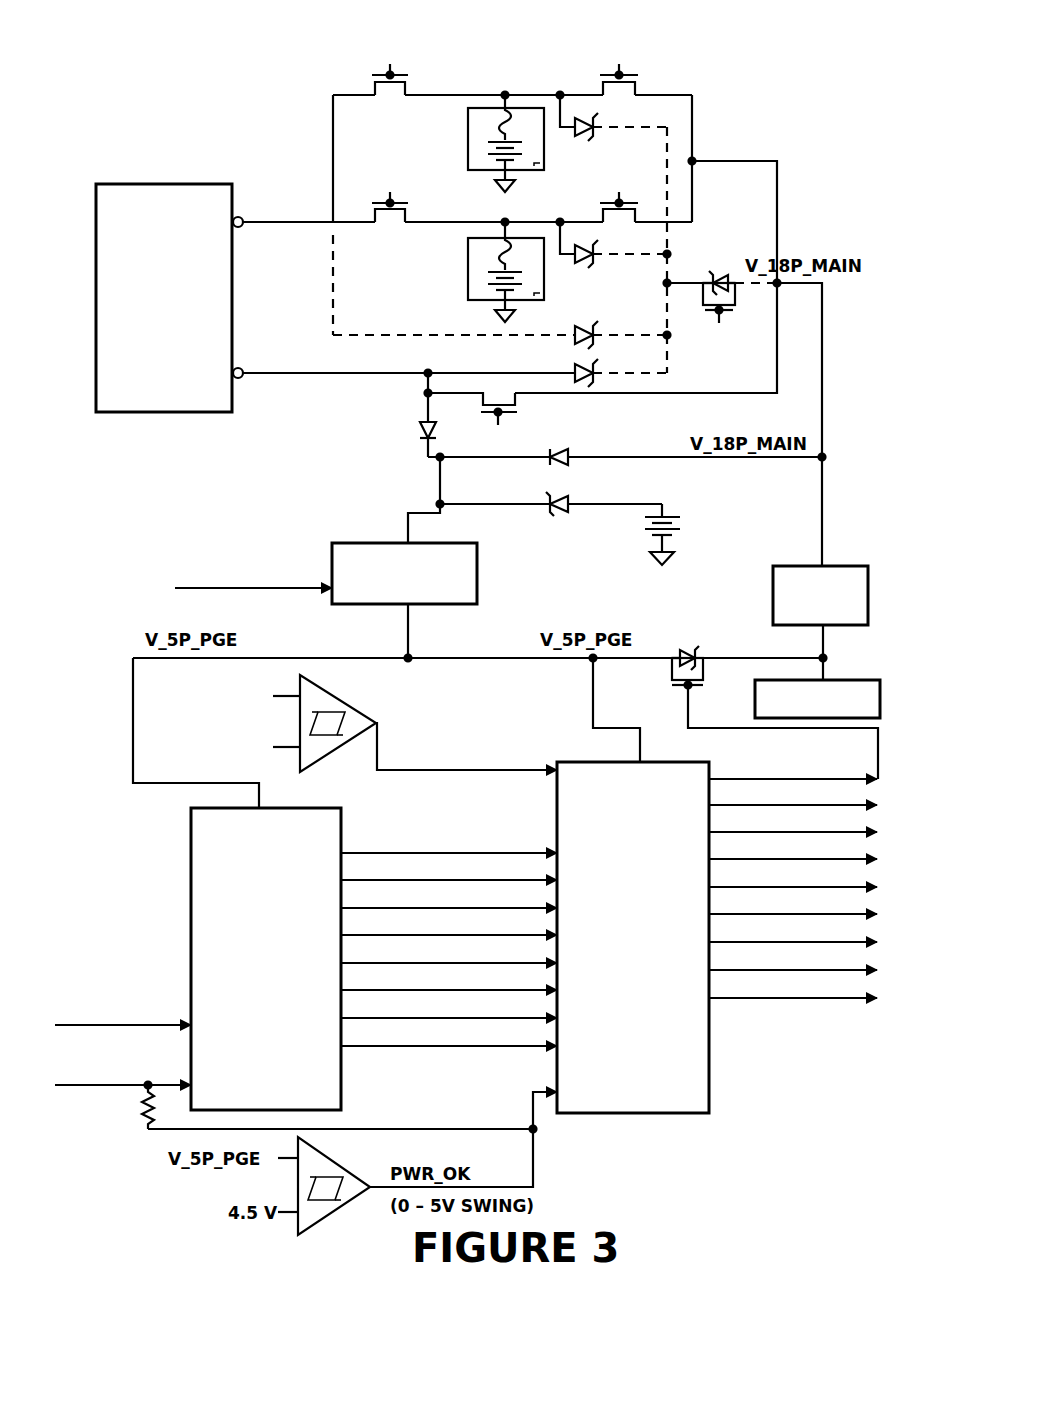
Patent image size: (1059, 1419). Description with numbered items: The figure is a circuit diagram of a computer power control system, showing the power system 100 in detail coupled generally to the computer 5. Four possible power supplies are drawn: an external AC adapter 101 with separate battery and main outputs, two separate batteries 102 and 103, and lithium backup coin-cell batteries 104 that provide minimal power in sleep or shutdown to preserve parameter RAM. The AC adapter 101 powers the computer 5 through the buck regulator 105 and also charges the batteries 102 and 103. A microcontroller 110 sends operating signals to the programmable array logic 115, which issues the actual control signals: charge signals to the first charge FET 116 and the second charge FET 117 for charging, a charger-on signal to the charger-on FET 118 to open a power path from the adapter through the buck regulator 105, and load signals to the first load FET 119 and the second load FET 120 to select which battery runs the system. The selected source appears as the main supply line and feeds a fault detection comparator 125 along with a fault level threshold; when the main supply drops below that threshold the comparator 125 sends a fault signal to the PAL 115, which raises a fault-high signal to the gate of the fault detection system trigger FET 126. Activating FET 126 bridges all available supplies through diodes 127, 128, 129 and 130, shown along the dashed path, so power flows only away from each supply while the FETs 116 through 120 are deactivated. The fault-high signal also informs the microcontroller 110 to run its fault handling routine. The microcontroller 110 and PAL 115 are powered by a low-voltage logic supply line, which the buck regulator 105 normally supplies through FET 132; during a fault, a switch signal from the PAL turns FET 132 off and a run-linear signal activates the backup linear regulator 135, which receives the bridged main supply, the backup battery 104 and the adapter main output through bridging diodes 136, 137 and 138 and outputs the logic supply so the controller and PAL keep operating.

The power system 100 is at (197, 65).
The external AC adapter 101 is at (96, 222).
The battery 102 is at (467, 130).
The battery 103 is at (467, 286).
The backup battery 104 is at (668, 559).
The buck regulator 105 is at (838, 566).
The microcontroller 110 is at (190, 828).
The programmable array logic (PAL) 115 is at (709, 1093).
The CHARGE_1 FET 116 is at (407, 84).
The CHARGE_2 FET 117 is at (407, 212).
The CHGR_ON FET 118 is at (517, 406).
The LOAD_1 FET 119 is at (637, 90).
The LOAD_2 FET 120 is at (602, 217).
The fault detection comparator 125 is at (372, 698).
The fault detection system trigger FET 126 is at (714, 277).
The diode 127 is at (598, 137).
The diode 128 is at (601, 264).
The diode 129 is at (598, 326).
The diode 130 is at (598, 365).
The FET 132 is at (688, 647).
The linear regulator 135 is at (366, 543).
The bridging diode 136 is at (420, 432).
The bridging diode 137 is at (548, 460).
The bridging diode 138 is at (559, 512).
The computer 5 is at (850, 680).